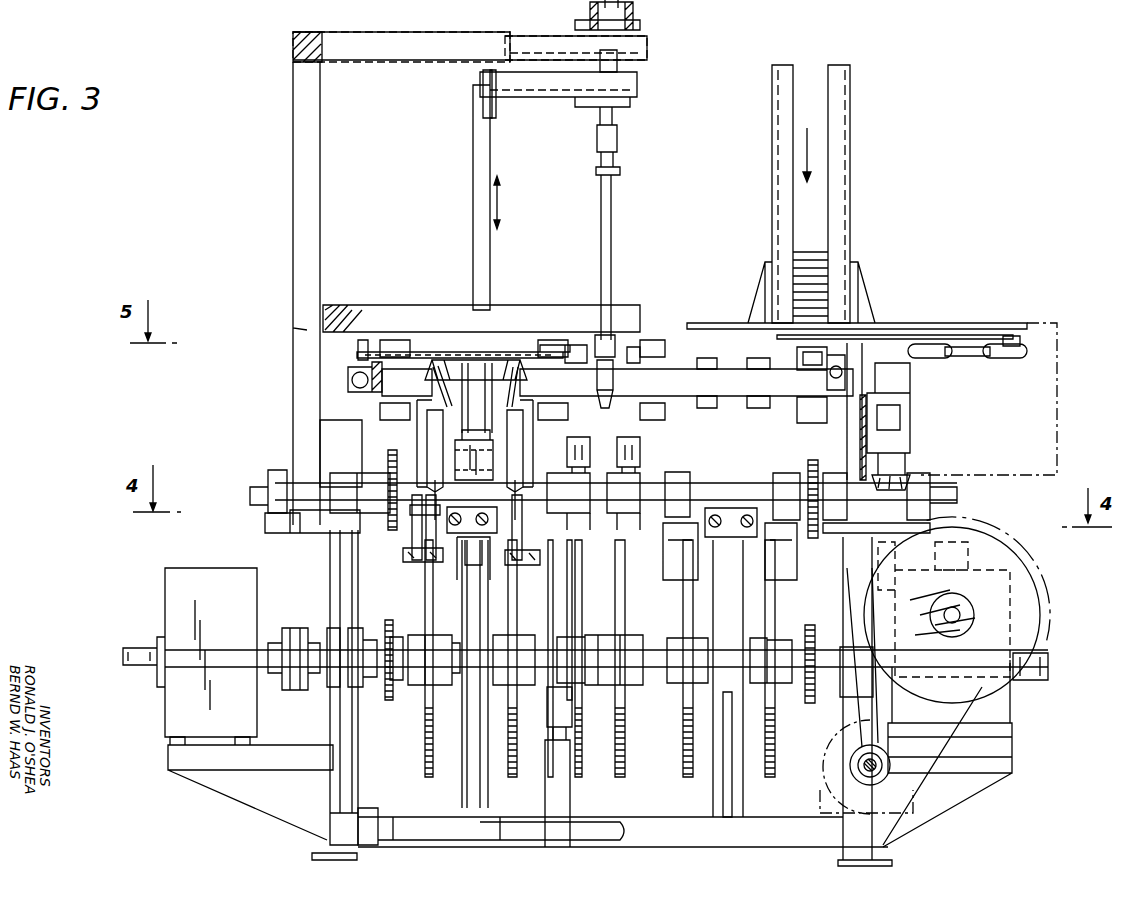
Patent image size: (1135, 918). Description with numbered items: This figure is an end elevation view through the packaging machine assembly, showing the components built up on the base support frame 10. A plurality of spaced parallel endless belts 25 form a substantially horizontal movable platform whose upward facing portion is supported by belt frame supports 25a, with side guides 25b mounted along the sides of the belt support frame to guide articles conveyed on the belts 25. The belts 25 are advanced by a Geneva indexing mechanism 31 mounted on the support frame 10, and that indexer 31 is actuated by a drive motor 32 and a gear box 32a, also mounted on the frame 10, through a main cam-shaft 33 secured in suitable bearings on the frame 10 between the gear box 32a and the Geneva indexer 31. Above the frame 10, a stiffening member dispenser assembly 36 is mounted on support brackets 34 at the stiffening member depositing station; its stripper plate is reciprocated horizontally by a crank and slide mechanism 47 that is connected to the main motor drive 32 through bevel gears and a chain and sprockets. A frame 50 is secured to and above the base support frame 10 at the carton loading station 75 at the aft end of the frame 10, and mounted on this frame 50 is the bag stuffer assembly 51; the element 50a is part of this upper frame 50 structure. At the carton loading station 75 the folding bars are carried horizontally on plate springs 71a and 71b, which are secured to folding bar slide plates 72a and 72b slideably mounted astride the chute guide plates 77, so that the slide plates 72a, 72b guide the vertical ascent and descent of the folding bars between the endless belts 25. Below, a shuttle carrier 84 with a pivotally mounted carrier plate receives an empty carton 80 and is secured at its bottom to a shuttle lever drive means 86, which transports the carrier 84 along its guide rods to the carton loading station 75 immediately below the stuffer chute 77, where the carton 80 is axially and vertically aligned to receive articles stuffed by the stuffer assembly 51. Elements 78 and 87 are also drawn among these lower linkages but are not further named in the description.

The base support frame 10 is at (340, 733).
The endless belts 25 is at (752, 357).
The belt frame supports 25a is at (377, 370).
The side guides 25b is at (365, 350).
The Geneva indexing mechanism 31 is at (180, 607).
The drive motor 32 is at (982, 687).
The gear box 32a is at (1040, 583).
The main cam-shaft 33 is at (373, 650).
The support brackets 34 is at (887, 325).
The stiffening member dispenser assembly 36 is at (858, 226).
The crank and slide mechanism 47 is at (925, 468).
The frame 50 is at (442, 40).
The beam mounting block 50a is at (635, 17).
The bag stuffer assembly 51 is at (492, 265).
The plate spring 71a is at (509, 390).
The plate spring 71b is at (432, 393).
The folding bar slide plate 72a is at (515, 438).
The folding bar slide plate 72b is at (440, 455).
The carton loading station 75 is at (428, 212).
The chute guide plates 77 is at (476, 396).
The push rod 78 is at (427, 624).
The empty carton 80 is at (478, 458).
The shuttle carrier 84 is at (453, 492).
The shuttle lever drive means 86 is at (493, 498).
The clamp 87 is at (410, 562).